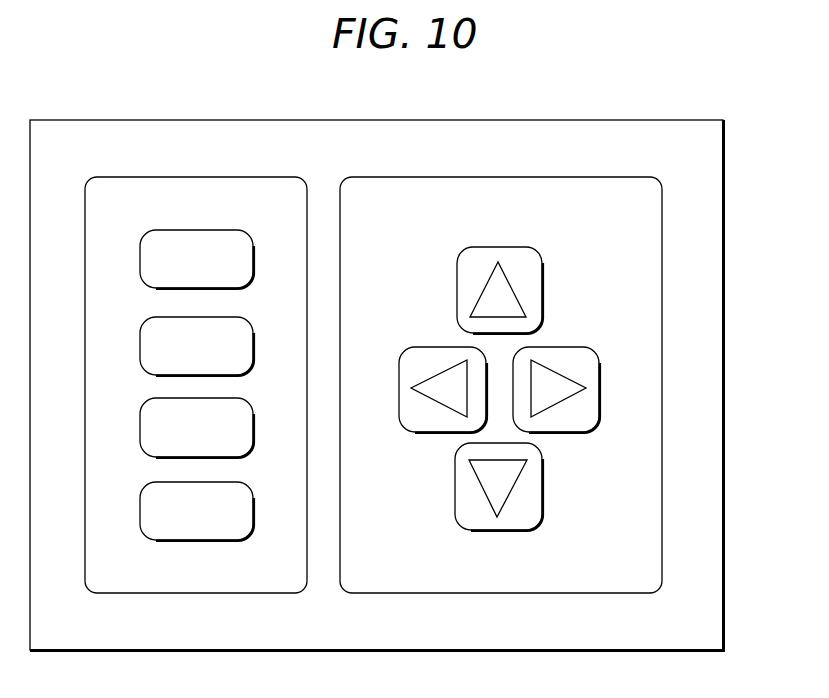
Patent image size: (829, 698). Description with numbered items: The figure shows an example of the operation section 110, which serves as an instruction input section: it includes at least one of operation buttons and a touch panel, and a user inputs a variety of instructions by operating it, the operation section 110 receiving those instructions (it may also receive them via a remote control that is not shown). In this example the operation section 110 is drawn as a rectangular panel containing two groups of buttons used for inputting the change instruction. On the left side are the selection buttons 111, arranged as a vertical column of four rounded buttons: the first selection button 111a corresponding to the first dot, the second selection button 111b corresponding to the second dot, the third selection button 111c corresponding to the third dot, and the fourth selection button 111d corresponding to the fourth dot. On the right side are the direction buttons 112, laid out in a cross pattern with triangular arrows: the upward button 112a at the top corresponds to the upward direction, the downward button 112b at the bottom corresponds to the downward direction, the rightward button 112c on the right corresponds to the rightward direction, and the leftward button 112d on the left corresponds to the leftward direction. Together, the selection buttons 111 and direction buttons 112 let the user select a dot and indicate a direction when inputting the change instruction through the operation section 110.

The operation section 110 is at (725, 148).
The selection buttons 111 is at (212, 174).
The first selection button 111a is at (227, 228).
The second selection button 111b is at (227, 317).
The third selection button 111c is at (227, 398).
The fourth selection button 111d is at (227, 482).
The direction buttons 112 is at (556, 174).
The upward button 112a is at (517, 247).
The downward button 112b is at (543, 479).
The rightward button 112c is at (562, 345).
The leftward button 112d is at (432, 347).